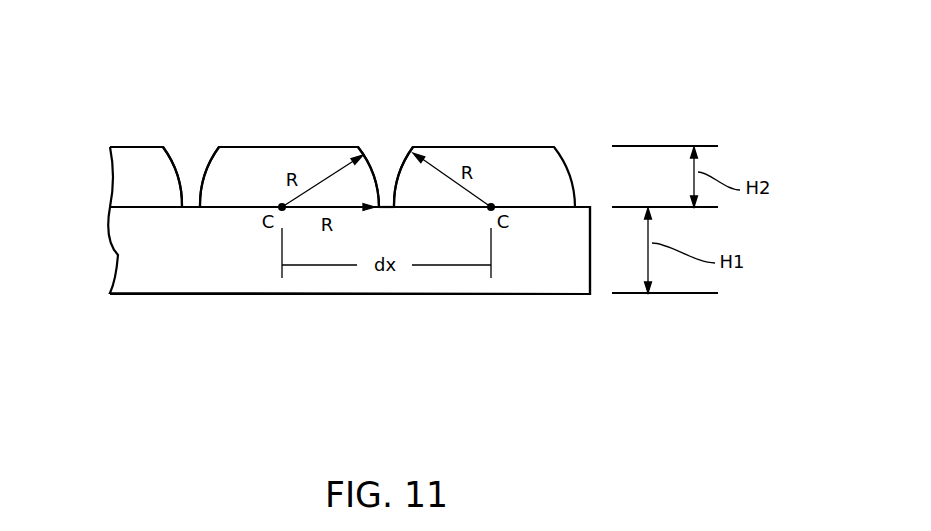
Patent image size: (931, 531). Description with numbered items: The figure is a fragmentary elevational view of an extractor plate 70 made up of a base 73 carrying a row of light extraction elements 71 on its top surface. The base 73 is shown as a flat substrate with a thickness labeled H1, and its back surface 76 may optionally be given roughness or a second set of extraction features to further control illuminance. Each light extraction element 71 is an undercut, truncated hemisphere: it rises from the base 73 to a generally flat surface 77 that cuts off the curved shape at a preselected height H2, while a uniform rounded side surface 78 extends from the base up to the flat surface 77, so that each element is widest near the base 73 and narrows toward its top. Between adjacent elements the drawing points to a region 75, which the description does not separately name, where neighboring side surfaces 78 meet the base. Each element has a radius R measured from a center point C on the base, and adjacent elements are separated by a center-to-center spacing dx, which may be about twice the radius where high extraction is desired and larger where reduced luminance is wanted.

The extractor plate 70 is at (560, 338).
The light extraction element 71 is at (190, 152).
The base 73 is at (246, 281).
The gap between lens elements 75 is at (387, 203).
The back surface 76 is at (143, 295).
The flat surface 77 is at (288, 146).
The rounded side surface 78 is at (167, 146).